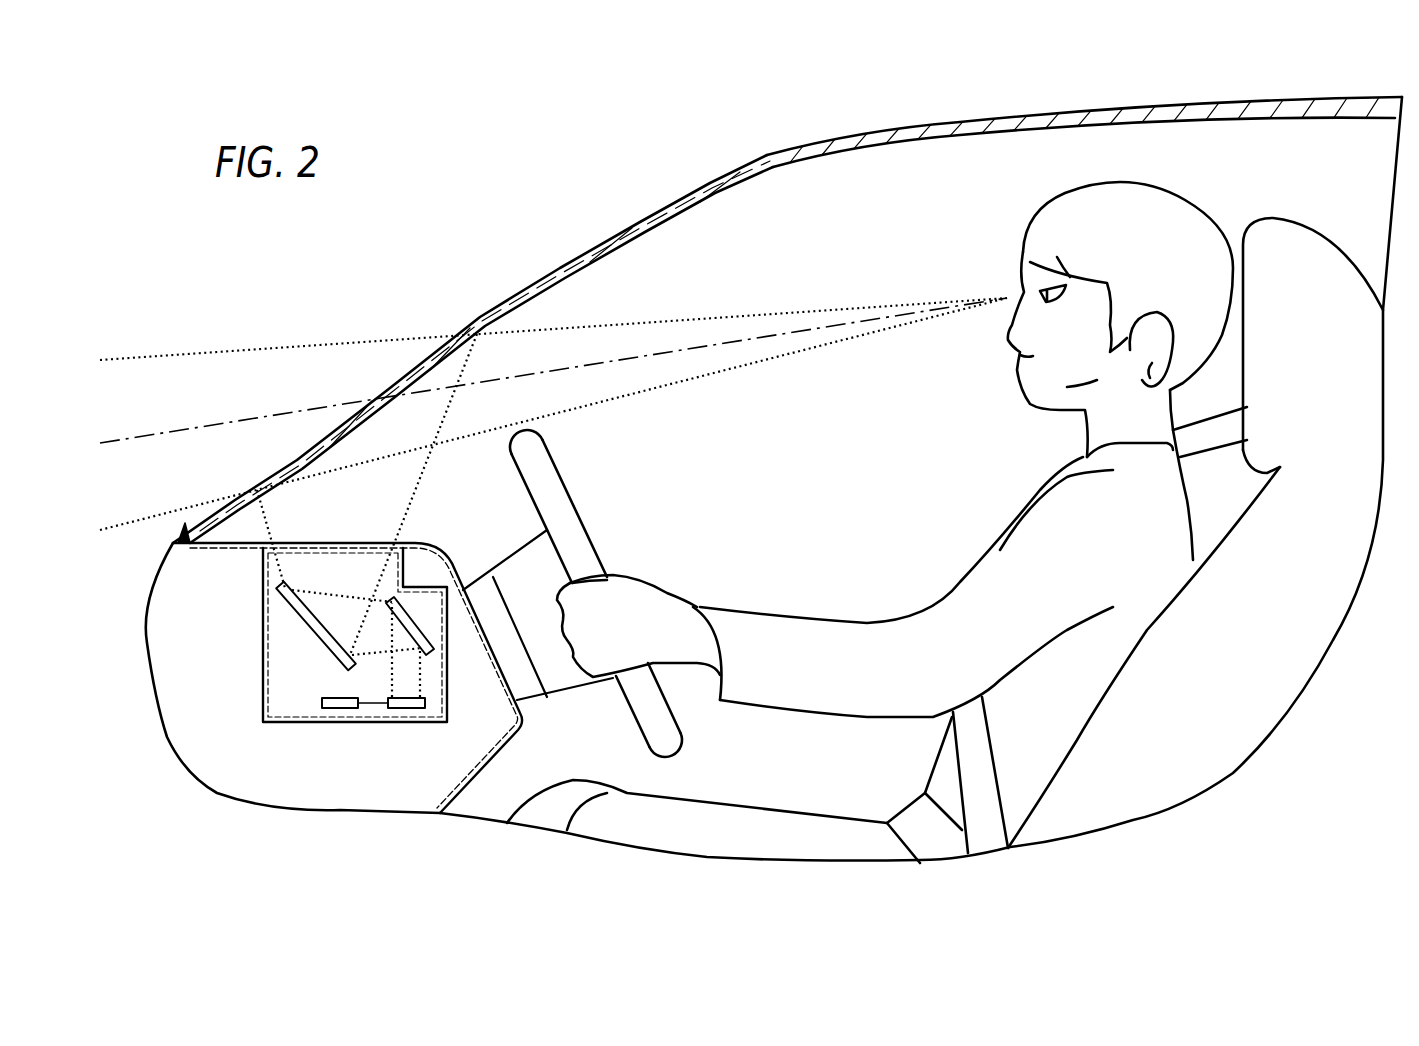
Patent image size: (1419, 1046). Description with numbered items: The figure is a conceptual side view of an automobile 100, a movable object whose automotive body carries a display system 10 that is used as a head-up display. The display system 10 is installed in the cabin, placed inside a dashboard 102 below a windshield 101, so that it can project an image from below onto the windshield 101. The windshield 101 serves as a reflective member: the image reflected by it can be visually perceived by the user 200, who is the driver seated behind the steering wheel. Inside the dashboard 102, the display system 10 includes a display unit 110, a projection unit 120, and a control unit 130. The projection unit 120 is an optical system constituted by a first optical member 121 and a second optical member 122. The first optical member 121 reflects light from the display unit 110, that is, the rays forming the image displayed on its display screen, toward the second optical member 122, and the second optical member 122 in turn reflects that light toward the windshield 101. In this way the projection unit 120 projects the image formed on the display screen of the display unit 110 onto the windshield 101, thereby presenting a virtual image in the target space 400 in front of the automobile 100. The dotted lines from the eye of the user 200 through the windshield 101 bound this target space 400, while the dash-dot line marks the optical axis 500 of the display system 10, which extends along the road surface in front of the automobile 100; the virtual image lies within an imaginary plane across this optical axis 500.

The display system 10 is at (318, 549).
The automobile 100 is at (878, 131).
The windshield 101 is at (558, 273).
The dashboard 102 is at (523, 727).
The display unit 110 is at (407, 709).
The projection unit 120 is at (297, 629).
The first optical member 121 is at (407, 626).
The second optical member 122 is at (300, 614).
The control unit 130 is at (340, 709).
The user 200 is at (1037, 235).
The target space 400 is at (208, 352).
The optical axis 500 is at (140, 437).